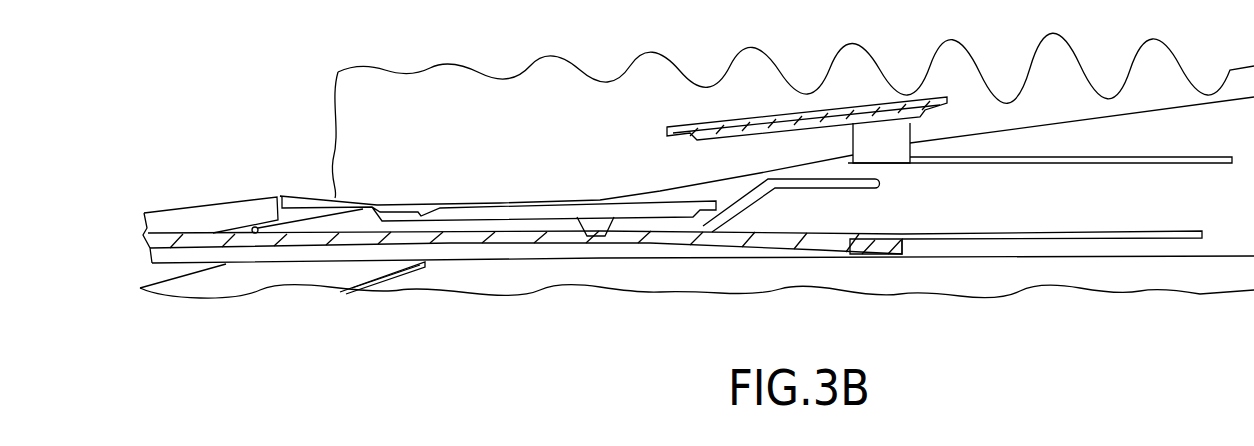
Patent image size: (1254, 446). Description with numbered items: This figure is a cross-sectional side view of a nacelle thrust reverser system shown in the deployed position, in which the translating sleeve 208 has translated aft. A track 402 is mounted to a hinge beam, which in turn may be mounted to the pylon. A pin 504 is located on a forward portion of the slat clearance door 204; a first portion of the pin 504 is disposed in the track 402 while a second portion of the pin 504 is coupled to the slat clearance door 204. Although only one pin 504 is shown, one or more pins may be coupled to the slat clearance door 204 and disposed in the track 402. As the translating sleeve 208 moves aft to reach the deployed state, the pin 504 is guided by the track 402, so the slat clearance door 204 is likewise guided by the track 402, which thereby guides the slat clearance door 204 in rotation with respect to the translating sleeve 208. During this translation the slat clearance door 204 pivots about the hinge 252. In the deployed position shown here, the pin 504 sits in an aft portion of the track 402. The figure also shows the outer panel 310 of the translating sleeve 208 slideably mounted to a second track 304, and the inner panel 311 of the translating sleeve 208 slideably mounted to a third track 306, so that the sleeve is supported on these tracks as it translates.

The slat clearance door 204 is at (507, 205).
The translating sleeve 208 is at (226, 207).
The hinge 252 is at (257, 227).
The track (second track) 304 is at (1062, 157).
The track (third track) 306 is at (1150, 238).
The panel (outer panel) 310 is at (913, 112).
The panel (inner panel) 311 is at (875, 243).
The track 402 is at (738, 200).
The pin 504 is at (595, 226).